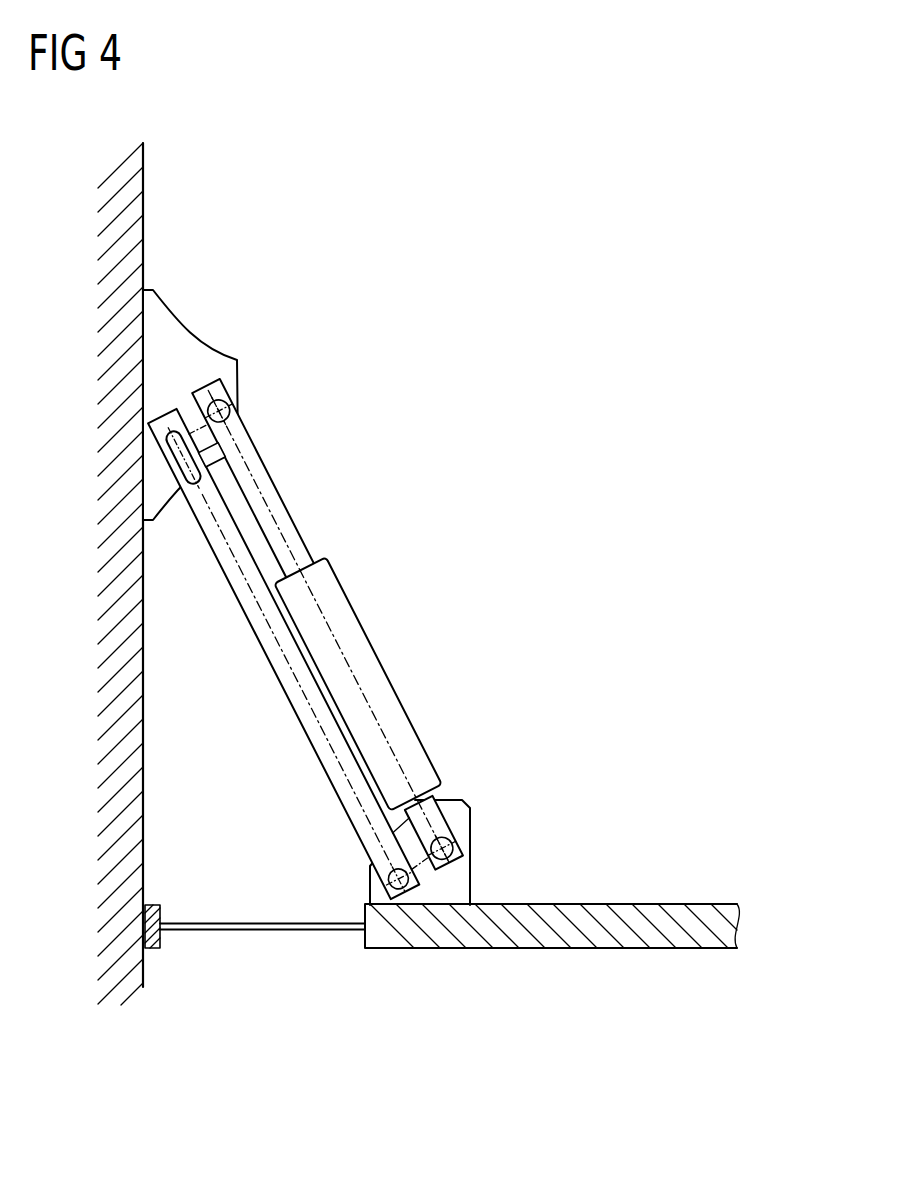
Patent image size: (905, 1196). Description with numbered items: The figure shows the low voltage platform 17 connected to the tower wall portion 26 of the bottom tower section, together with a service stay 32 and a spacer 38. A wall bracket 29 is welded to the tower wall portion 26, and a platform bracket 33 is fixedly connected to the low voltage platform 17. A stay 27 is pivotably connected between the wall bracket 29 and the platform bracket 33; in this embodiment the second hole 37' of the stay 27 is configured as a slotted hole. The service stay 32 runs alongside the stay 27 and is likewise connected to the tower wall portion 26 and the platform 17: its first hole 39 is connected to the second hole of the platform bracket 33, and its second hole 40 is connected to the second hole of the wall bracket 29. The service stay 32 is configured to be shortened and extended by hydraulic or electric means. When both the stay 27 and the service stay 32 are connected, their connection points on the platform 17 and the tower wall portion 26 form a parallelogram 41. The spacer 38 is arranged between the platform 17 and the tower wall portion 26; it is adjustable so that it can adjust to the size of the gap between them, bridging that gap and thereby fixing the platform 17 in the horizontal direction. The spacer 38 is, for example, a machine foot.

The low voltage platform 17 is at (572, 938).
The tower wall portion 26 is at (143, 197).
The stay 27 is at (280, 685).
The wall bracket 29 is at (197, 340).
The service stay 32 is at (362, 622).
The platform bracket 33 is at (455, 802).
The second hole of the stay 37' is at (246, 451).
The spacer 38 is at (248, 932).
The first hole of the service stay 39 is at (454, 846).
The second hole of the service stay 40 is at (231, 402).
The parallelogram 41 is at (277, 518).